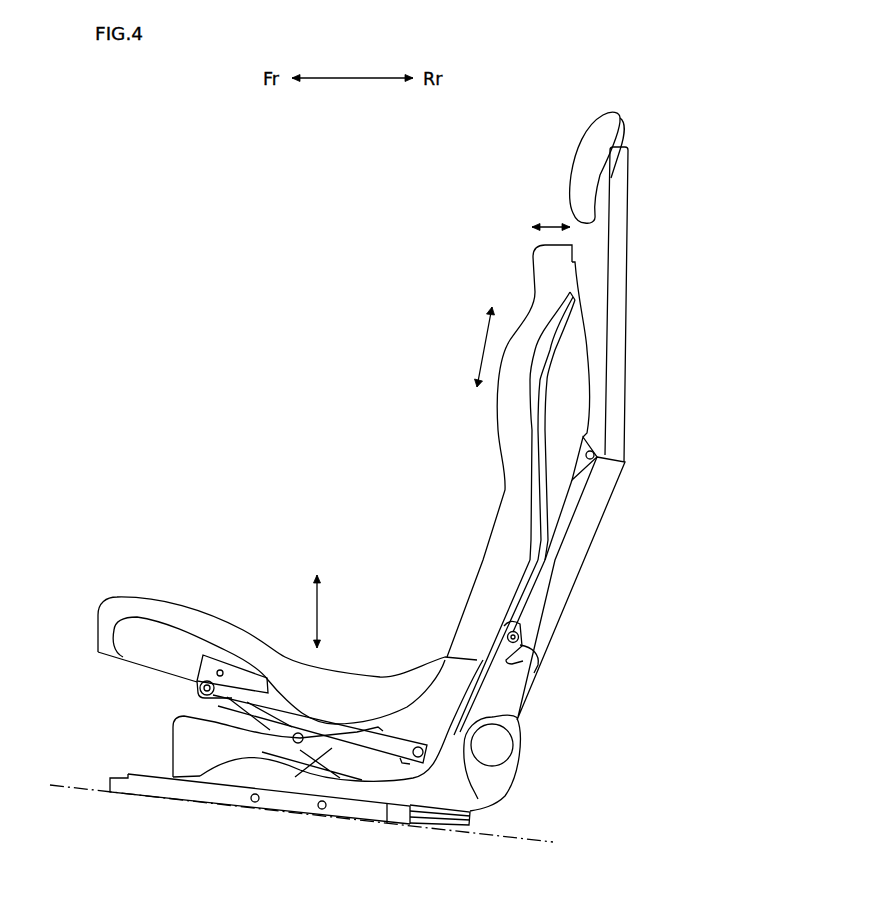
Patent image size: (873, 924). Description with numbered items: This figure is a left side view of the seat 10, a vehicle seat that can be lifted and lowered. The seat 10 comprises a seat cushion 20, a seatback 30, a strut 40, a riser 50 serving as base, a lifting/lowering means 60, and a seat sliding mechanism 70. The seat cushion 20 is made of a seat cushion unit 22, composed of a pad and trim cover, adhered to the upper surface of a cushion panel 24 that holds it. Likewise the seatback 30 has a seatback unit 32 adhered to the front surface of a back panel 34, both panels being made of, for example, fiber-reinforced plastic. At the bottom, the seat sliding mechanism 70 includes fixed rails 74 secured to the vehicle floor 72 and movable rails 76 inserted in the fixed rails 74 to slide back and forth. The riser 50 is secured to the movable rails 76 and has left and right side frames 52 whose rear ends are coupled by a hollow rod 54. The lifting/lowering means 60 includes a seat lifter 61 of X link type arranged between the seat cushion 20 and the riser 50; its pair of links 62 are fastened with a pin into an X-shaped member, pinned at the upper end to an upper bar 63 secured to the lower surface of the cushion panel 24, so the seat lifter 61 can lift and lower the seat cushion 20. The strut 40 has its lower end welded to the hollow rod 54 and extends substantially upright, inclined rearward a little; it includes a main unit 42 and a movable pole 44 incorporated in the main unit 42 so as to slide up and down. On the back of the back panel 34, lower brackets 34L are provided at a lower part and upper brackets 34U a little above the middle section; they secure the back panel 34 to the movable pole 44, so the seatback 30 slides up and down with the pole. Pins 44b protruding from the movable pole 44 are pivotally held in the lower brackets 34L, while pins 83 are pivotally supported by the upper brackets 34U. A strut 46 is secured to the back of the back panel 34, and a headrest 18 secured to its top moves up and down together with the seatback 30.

The seat 10 is at (349, 317).
The headrest 18 is at (586, 152).
The seat cushion 20 is at (190, 592).
The seat cushion unit 22 is at (224, 627).
The cushion panel 24 is at (147, 632).
The seatback 30 is at (465, 495).
The seatback unit 32 is at (487, 573).
The back panel 34 is at (575, 387).
The upper brackets 34U is at (587, 438).
The lower brackets 34L is at (505, 652).
The strut 40 is at (599, 598).
The main unit 42 is at (597, 510).
The movable pole 44 is at (525, 618).
The pins 44b is at (520, 650).
The strut 46 is at (621, 288).
The riser 50 is at (158, 742).
The side frames 52 is at (235, 800).
The hollow rod 54 is at (503, 745).
The lifting/lowering means 60 is at (176, 692).
The seat lifter 61 is at (250, 703).
The links 62 is at (330, 764).
The upper bar 63 is at (381, 762).
The seat sliding mechanism 70 is at (98, 772).
The vehicle floor 72 is at (533, 848).
The fixed rails 74 is at (163, 796).
The movable rails 76 is at (457, 824).
The pins 83 is at (598, 453).